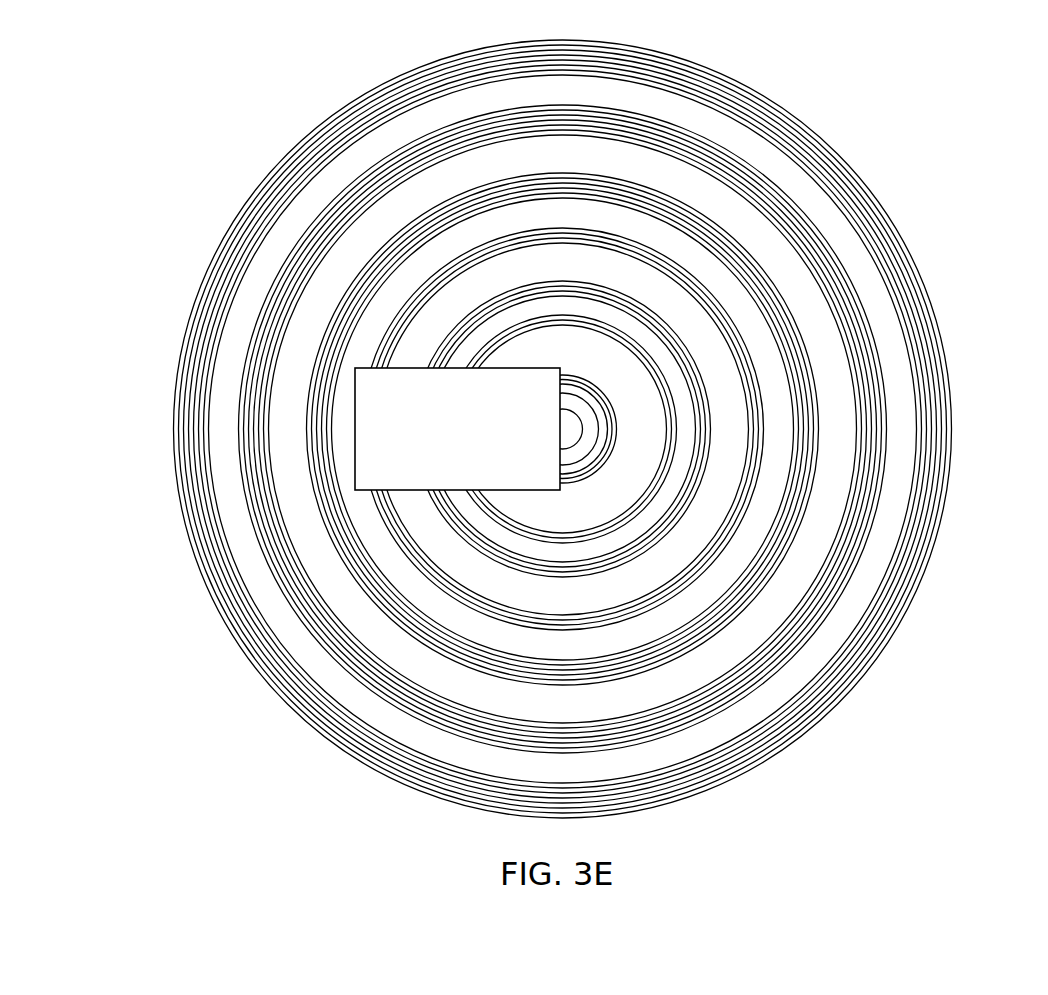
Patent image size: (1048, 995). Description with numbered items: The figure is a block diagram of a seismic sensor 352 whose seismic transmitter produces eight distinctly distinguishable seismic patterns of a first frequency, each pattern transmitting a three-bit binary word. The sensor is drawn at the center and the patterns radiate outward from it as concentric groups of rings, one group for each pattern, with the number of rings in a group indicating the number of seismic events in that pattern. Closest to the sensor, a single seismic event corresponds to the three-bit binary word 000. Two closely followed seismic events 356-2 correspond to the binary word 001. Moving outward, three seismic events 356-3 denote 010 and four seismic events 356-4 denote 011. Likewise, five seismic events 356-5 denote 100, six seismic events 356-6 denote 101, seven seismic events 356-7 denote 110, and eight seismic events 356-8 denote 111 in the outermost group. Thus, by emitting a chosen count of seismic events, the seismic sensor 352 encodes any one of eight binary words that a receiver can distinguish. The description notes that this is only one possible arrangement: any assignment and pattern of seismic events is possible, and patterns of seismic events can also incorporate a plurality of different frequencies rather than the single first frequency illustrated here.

The seismic sensor 352 is at (457, 429).
The two closely followed seismic events 356-2 is at (606, 466).
The three seismic events 356-3 is at (564, 316).
The four seismic events 356-4 is at (582, 283).
The five seismic events 356-5 is at (547, 228).
The six seismic events 356-6 is at (593, 175).
The seven seismic events 356-7 is at (662, 125).
The eight seismic events 356-8 is at (778, 103).
The three-bit binary word 000 is at (608, 388).
The three-bit binary word 001 is at (626, 439).
The three-bit binary word 010 is at (641, 333).
The three-bit binary word 011 is at (716, 388).
The three-bit binary word 100 is at (712, 276).
The three-bit binary word 101 is at (765, 258).
The three-bit binary word 110 is at (860, 293).
The three-bit binary word 111 is at (944, 322).